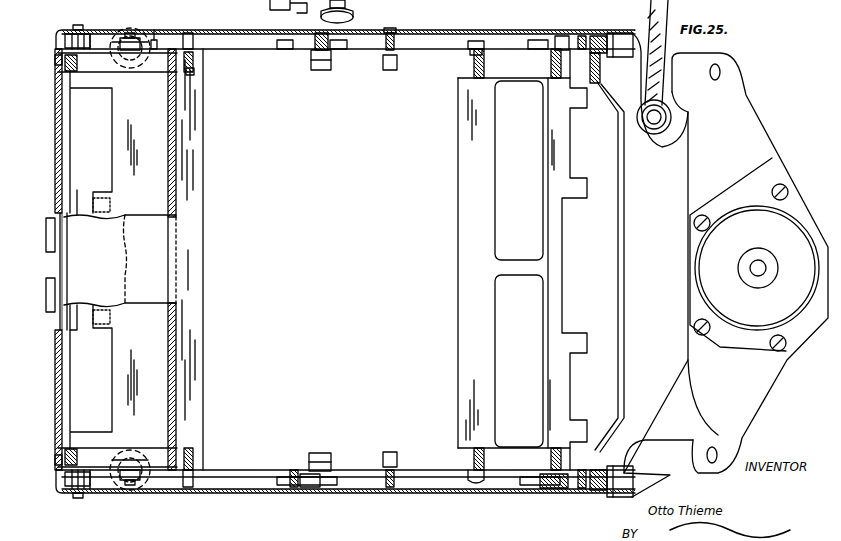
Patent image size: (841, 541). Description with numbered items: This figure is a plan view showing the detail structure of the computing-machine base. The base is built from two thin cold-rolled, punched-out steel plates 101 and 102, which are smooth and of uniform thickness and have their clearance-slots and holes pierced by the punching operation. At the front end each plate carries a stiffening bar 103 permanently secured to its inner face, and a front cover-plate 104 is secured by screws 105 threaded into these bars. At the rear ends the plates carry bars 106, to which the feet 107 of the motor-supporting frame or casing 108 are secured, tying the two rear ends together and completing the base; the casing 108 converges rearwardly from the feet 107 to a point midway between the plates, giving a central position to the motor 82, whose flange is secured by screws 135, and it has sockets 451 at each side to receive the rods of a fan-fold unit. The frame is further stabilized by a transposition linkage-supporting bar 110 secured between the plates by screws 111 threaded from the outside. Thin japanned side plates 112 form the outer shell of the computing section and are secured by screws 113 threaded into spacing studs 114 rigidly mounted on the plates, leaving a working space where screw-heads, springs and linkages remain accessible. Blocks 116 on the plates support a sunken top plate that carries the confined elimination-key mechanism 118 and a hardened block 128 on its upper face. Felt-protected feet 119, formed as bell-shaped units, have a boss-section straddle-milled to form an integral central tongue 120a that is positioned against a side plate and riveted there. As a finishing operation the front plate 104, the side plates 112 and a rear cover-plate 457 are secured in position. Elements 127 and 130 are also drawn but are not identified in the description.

The motor 82 is at (754, 254).
The steel plate 101 is at (238, 50).
The steel plate 102 is at (265, 470).
The stiffening bar 103 is at (74, 86).
The front cover-plate 104 is at (120, 279).
The screw 105 is at (72, 63).
The bar 106 is at (601, 36).
The foot 107 is at (618, 33).
The motor-supporting frame or casing 108 is at (709, 248).
The transposition linkage-supporting bar 110 is at (514, 263).
The screw 111 is at (180, 46).
The side plate 112 is at (449, 30).
The screw 113 is at (78, 34).
The spacing stud 114 is at (98, 34).
The block 116 is at (196, 70).
The elimination-key mechanism 118 is at (130, 28).
The foot 119 is at (350, 10).
The central tongue 120a is at (155, 38).
The spacer 127 is at (300, 50).
The hardened block 128 is at (326, 70).
The shaft 130 is at (766, 269).
The screw 135 is at (708, 228).
The socket 451 is at (721, 72).
The rear cover-plate 457 is at (600, 268).